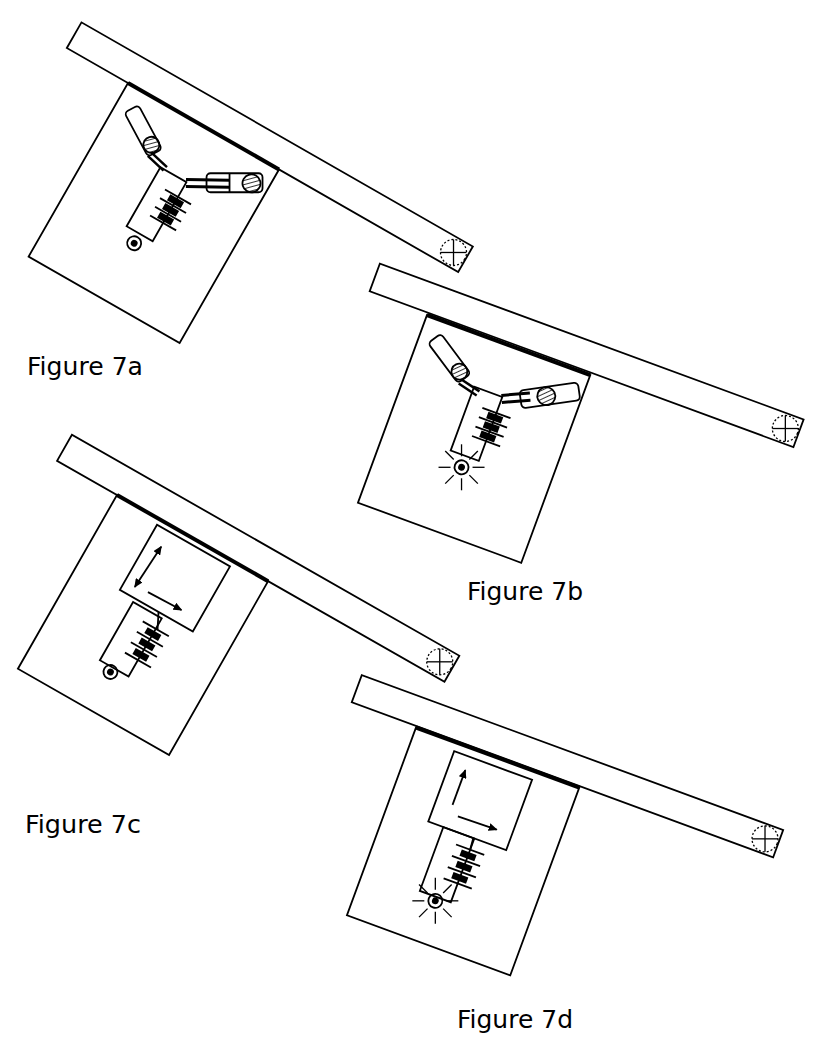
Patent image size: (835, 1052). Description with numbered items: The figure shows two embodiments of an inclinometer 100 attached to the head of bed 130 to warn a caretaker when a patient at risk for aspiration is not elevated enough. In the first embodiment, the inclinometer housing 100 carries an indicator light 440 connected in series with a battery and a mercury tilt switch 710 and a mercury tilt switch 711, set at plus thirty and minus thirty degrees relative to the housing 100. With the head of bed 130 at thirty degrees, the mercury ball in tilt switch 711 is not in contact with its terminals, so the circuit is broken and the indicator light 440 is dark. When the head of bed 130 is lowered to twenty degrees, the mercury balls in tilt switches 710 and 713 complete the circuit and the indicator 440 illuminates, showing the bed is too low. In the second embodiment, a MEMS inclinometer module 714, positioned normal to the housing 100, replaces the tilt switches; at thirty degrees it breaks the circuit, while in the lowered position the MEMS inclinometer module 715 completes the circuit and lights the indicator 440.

In FIG. 7A, the head of bed 130 is at (373, 192).
In FIG. 7B, the head of bed 130 is at (690, 393).
In FIG. 7C, the head of bed 130 is at (137, 483).
In FIG. 7D, the head of bed 130 is at (601, 773).
In FIG. 7A, the inclinometer housing 100 is at (178, 284).
In FIG. 7B, the inclinometer housing 100 is at (517, 502).
In FIG. 7C, the inclinometer housing 100 is at (187, 682).
In FIG. 7D, the inclinometer housing 100 is at (517, 900).
In FIG. 7A, the mercury tilt switch 710 is at (137, 123).
In FIG. 7B, the mercury tilt switch 710 is at (460, 357).
In FIG. 7A, the mercury tilt switch 711 is at (240, 172).
In FIG. 7B, the mercury tilt switch 713 is at (560, 393).
In FIG. 7C, the MEMS inclinometer module 714 is at (177, 562).
In FIG. 7D, the MEMS inclinometer module 715 is at (485, 790).
In FIG. 7A, the indicator light 440 is at (143, 243).
In FIG. 7B, the indicator light 440 is at (460, 472).
In FIG. 7C, the indicator light 440 is at (110, 680).
In FIG. 7D, the indicator light 440 is at (423, 898).